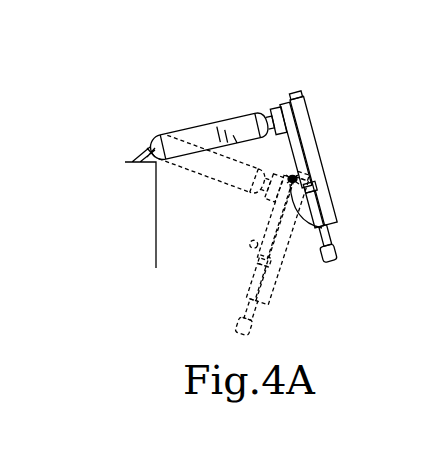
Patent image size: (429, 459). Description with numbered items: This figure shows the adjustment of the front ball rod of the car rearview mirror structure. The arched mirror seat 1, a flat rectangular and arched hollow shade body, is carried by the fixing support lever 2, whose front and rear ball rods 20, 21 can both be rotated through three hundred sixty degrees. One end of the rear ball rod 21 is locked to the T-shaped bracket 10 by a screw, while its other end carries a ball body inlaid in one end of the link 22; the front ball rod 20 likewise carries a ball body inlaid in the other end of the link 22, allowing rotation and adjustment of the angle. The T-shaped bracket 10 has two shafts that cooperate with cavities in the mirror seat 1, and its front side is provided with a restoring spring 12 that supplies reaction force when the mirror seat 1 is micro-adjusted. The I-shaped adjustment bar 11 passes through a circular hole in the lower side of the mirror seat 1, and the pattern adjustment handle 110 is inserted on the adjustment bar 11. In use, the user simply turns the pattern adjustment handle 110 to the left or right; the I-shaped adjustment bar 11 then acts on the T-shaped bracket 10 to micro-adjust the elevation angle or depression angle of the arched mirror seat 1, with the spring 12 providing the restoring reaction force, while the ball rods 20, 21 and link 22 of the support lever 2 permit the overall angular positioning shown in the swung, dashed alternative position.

The arched mirror seat 1 is at (312, 208).
The fixing support lever 2 is at (188, 94).
The T-shaped bracket 10 is at (277, 107).
The I-shaped adjustment bar 11 is at (327, 237).
The restoring spring 12 is at (290, 180).
The front ball rod 20 is at (148, 155).
The rear ball rod 21 is at (265, 108).
The link 22 is at (200, 128).
The pattern adjustment handle 110 is at (323, 257).